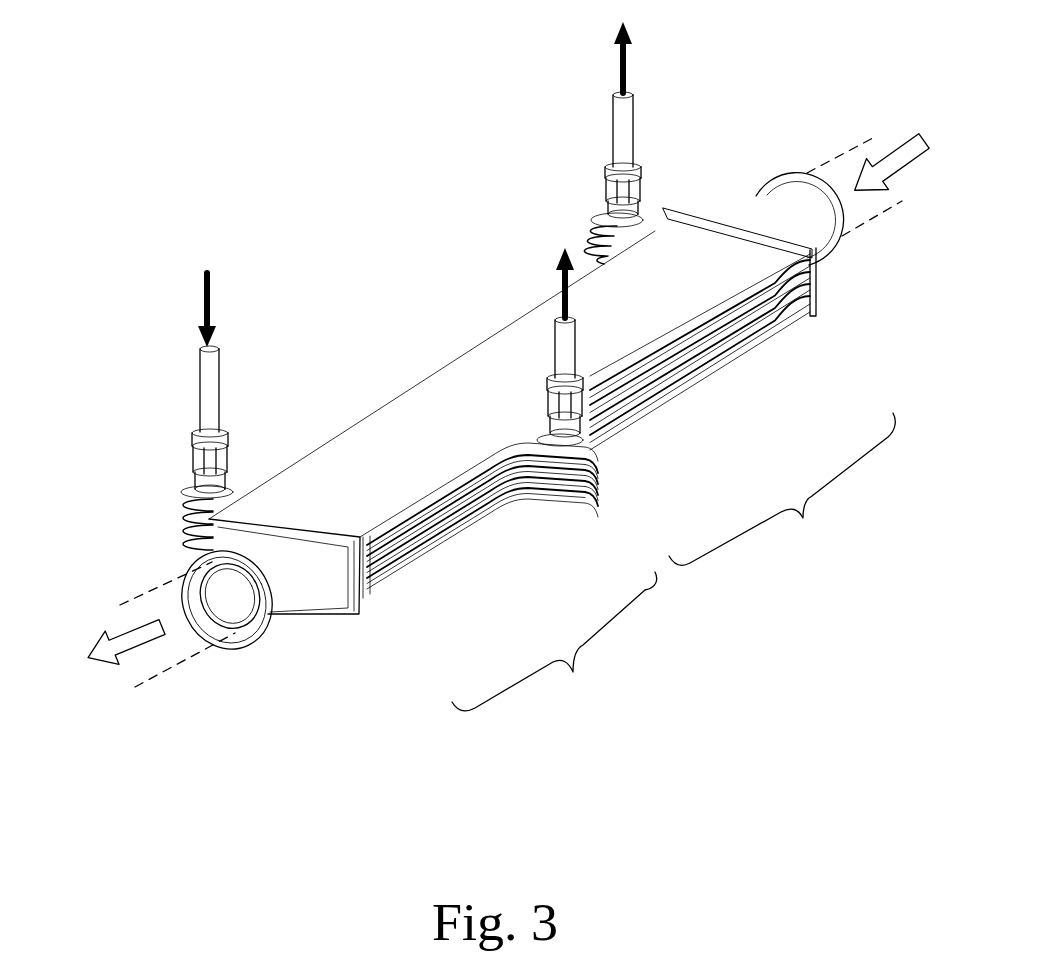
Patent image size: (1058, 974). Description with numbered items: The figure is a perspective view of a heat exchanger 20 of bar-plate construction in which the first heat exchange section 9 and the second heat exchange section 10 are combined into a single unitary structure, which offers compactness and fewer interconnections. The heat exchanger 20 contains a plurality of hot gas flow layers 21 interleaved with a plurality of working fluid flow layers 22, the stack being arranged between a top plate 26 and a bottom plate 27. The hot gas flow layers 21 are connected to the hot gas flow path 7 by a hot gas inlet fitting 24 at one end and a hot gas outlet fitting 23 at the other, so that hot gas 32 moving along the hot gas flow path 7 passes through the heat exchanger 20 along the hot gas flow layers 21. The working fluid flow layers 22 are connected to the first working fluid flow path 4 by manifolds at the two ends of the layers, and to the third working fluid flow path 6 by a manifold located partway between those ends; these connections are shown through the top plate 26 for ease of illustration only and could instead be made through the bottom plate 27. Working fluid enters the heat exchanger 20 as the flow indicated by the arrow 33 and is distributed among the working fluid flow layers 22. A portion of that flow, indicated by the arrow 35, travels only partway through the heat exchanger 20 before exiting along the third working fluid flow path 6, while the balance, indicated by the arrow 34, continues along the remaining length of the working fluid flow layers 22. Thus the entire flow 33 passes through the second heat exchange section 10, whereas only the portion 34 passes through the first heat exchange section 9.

The heat exchanger 20 is at (379, 247).
The first working fluid flow path 4 is at (208, 392).
The third working fluid flow path 6 is at (563, 353).
The hot gas flow path 7 is at (158, 677).
The first heat exchange section 9 is at (782, 489).
The second heat exchange section 10 is at (554, 641).
The hot gas flow layers 21 is at (187, 547).
The working fluid flow layers 22 is at (595, 452).
The hot gas outlet fitting 23 is at (297, 595).
The hot gas inlet fitting 24 is at (760, 208).
The top plate 26 is at (427, 450).
The bottom plate 27 is at (410, 565).
The hot gas 32 is at (105, 660).
The arrow representing flow of working fluid 33 is at (210, 295).
The arrow representing balance of the flow 34 is at (613, 58).
The arrow representing portion of the flow 35 is at (563, 280).